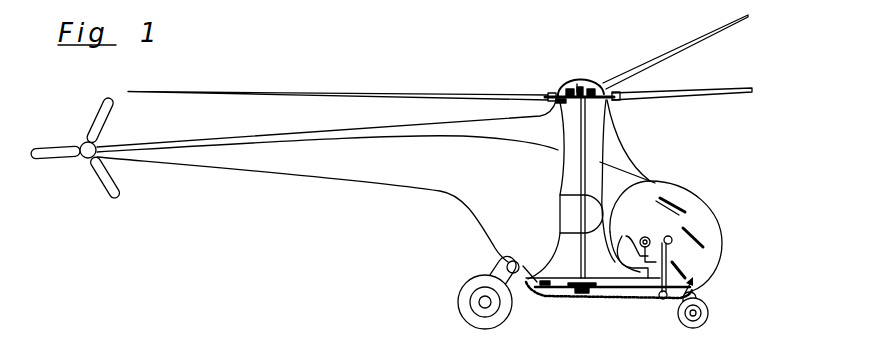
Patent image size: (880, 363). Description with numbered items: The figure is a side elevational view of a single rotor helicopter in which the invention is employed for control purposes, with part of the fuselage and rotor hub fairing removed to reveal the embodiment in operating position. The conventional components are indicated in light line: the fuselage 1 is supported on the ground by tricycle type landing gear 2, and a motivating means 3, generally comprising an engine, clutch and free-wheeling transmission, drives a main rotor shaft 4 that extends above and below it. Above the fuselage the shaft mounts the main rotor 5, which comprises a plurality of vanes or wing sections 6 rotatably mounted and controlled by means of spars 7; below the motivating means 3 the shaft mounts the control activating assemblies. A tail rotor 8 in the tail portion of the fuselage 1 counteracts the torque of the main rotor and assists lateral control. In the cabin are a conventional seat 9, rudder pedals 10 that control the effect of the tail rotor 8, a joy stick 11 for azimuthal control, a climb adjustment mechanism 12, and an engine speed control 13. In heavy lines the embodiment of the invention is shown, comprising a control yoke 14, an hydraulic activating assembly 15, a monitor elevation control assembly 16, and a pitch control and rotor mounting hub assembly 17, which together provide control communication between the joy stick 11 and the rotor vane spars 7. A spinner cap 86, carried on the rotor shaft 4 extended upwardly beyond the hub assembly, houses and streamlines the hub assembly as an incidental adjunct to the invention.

The fuselage 1 is at (466, 213).
The tricycle type landing gear 2 is at (500, 318).
The motivating means 3 is at (572, 220).
The main rotor shaft 4 is at (590, 152).
The main rotor 5 is at (607, 77).
The vanes or wing sections 6 is at (450, 93).
The spars 7 is at (554, 95).
The tail rotor 8 is at (87, 158).
The seat 9 is at (625, 238).
The rudder pedals 10 is at (695, 278).
The joy stick 11 is at (673, 257).
The climb adjustment mechanism 12 is at (652, 235).
The engine speed control 13 is at (671, 238).
The control yoke 14 is at (553, 289).
The hydraulic activating assembly 15 is at (588, 276).
The monitor elevation control assembly 16 is at (597, 297).
The pitch control and rotor mounting hub assembly 17 is at (565, 107).
The spinner cap 86 is at (577, 90).